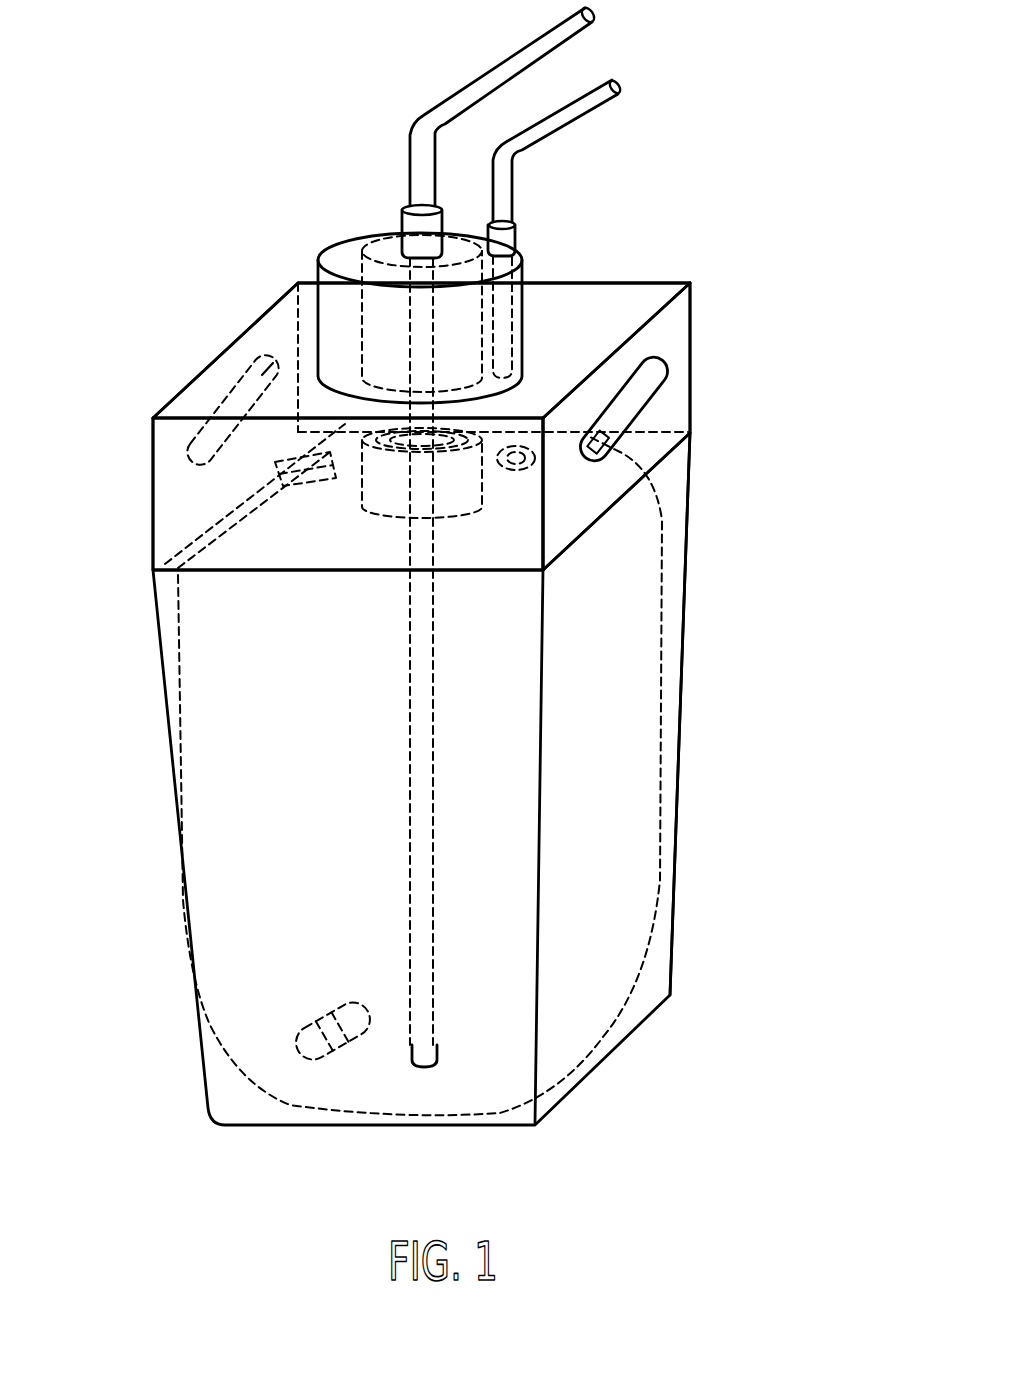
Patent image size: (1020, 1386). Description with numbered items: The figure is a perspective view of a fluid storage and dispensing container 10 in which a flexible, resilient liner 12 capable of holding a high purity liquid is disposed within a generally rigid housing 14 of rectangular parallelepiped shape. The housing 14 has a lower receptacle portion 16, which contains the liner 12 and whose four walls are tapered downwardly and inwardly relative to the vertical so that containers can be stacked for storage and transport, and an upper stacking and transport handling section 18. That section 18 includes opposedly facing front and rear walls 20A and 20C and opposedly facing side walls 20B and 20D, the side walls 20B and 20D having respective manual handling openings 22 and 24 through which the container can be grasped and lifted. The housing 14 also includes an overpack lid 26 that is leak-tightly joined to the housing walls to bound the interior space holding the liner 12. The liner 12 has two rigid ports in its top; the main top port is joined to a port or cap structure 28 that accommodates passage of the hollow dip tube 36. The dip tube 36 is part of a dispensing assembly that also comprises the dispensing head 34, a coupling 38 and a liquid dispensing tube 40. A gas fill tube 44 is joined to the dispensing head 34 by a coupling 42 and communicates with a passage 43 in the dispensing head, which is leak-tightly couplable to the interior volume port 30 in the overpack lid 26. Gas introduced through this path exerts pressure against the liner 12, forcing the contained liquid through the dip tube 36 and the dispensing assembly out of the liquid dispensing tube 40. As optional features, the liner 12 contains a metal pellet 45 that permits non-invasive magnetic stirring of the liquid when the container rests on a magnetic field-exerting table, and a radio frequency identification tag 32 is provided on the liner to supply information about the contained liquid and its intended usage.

The fluid storage and dispensing container 10 is at (167, 217).
The liner 12 is at (265, 958).
The housing 14 is at (762, 673).
The lower receptacle portion 16 is at (672, 913).
The upper stacking and transport handling section 18 is at (607, 282).
The front wall 20A is at (183, 497).
The side wall 20B is at (205, 368).
The rear wall 20C is at (677, 282).
The side wall 20D is at (587, 497).
The manual handling opening 22 is at (265, 370).
The manual handling opening 24 is at (653, 380).
The overpack lid 26 is at (627, 425).
The cap 28 is at (375, 487).
The interior volume port 30 is at (535, 465).
The radio frequency identification tag 32 is at (290, 460).
The dispensing head 34 is at (343, 234).
The dip tube 36 is at (437, 1050).
The coupling 38 is at (418, 227).
The liquid dispensing tube 40 is at (527, 50).
The coupling 42 is at (508, 233).
The passage 43 is at (505, 293).
The gas fill tube 44 is at (592, 104).
The metal pellet 45 is at (343, 1047).